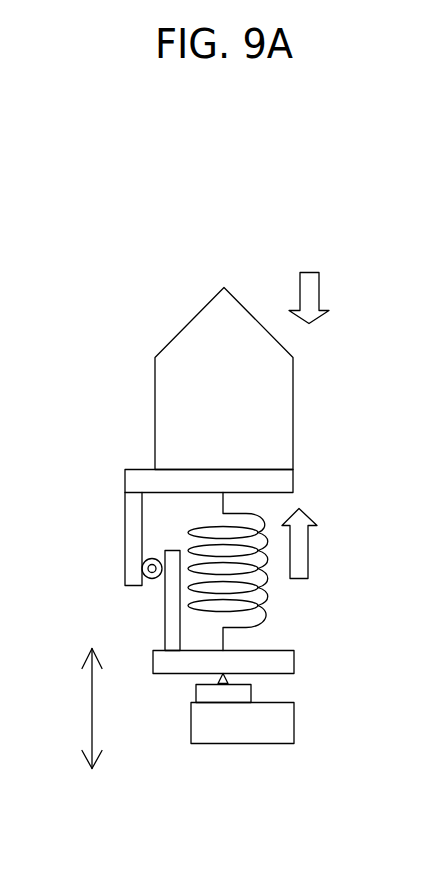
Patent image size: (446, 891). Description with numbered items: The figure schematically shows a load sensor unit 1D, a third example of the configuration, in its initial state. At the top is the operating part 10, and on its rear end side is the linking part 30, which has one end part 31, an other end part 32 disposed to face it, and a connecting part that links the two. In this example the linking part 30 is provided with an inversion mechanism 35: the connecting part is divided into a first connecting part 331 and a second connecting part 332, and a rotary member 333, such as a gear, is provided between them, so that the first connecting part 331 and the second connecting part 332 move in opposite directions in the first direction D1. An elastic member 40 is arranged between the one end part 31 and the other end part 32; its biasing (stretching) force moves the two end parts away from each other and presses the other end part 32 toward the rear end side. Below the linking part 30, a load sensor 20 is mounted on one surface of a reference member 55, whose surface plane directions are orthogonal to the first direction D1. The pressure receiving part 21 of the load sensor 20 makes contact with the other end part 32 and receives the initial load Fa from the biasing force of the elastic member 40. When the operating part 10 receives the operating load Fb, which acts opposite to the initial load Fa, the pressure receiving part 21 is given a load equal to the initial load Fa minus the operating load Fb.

The load sensor unit 1D is at (298, 192).
The operating part 10 is at (287, 395).
The linking part 30 is at (118, 493).
The one end part 31 is at (283, 483).
The first connecting part 331 is at (133, 522).
The second connecting part 332 is at (165, 625).
The rotary member 333 is at (143, 563).
The inversion mechanism 35 is at (140, 593).
The other end part 32 is at (285, 662).
The elastic member 40 is at (268, 590).
The load sensor 20 is at (205, 695).
The pressure receiving part 21 is at (227, 682).
The reference member 55 is at (288, 723).
The initial load Fa is at (315, 544).
The operating load Fb is at (326, 298).
The first direction D1 is at (91, 710).